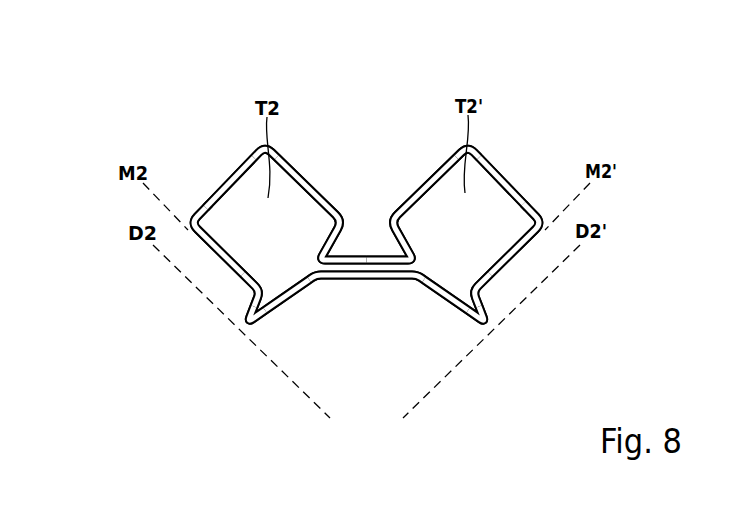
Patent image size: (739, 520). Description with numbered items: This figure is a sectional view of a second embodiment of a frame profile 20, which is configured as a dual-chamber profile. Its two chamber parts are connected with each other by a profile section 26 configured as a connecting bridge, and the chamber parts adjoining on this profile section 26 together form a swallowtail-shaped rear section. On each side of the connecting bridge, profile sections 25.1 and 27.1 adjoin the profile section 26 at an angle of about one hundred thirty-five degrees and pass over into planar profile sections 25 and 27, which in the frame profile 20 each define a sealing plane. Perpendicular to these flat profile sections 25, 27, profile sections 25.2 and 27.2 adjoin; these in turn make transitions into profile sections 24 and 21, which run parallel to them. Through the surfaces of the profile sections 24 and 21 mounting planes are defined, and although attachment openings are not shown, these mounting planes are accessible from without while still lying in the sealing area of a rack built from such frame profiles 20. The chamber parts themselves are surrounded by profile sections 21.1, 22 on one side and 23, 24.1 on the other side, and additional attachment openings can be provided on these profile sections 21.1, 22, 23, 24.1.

The frame profile 20 is at (510, 81).
The profile section 21 is at (212, 255).
The profile section 21.1 is at (220, 172).
The profile section 22 is at (313, 180).
The profile section 23 is at (422, 180).
The profile section 24 is at (521, 255).
The profile section 24.1 is at (517, 175).
The planar profile section 25 is at (499, 330).
The profile section 25.1 is at (445, 307).
The profile section 25.2 is at (502, 303).
The profile section 26 is at (367, 280).
The planar profile section 27 is at (235, 330).
The profile section 27.1 is at (287, 308).
The profile section 27.2 is at (223, 313).